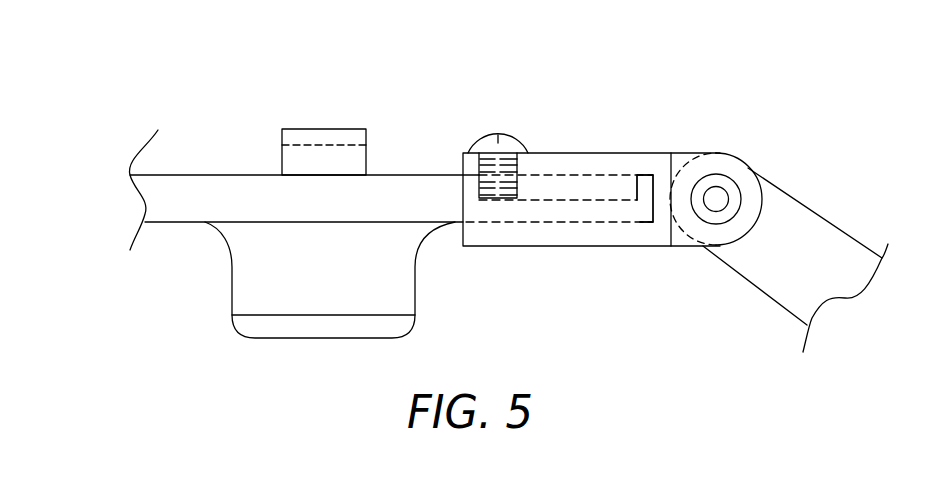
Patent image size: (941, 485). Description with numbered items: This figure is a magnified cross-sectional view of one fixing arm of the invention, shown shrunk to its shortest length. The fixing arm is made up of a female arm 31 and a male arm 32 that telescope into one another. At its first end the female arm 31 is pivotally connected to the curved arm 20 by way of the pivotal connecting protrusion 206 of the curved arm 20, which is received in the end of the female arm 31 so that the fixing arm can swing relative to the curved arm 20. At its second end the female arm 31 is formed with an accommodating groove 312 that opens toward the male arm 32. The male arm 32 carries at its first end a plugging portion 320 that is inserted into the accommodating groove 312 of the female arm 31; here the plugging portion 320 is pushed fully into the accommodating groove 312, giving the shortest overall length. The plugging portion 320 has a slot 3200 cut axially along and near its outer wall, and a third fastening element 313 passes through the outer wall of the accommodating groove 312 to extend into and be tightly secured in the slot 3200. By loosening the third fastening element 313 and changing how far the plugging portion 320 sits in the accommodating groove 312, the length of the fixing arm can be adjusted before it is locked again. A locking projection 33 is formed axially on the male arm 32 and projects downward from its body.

The curved arm 20 is at (795, 228).
The pivotal connecting protrusion 206 is at (735, 170).
The female arm 31 is at (575, 235).
The accommodating groove 312 is at (644, 207).
The plugging portion 320 is at (644, 207).
The slot 3200 is at (570, 187).
The third fastening element 313 is at (490, 150).
The male arm 32 is at (407, 187).
The locking projection 33 is at (347, 328).